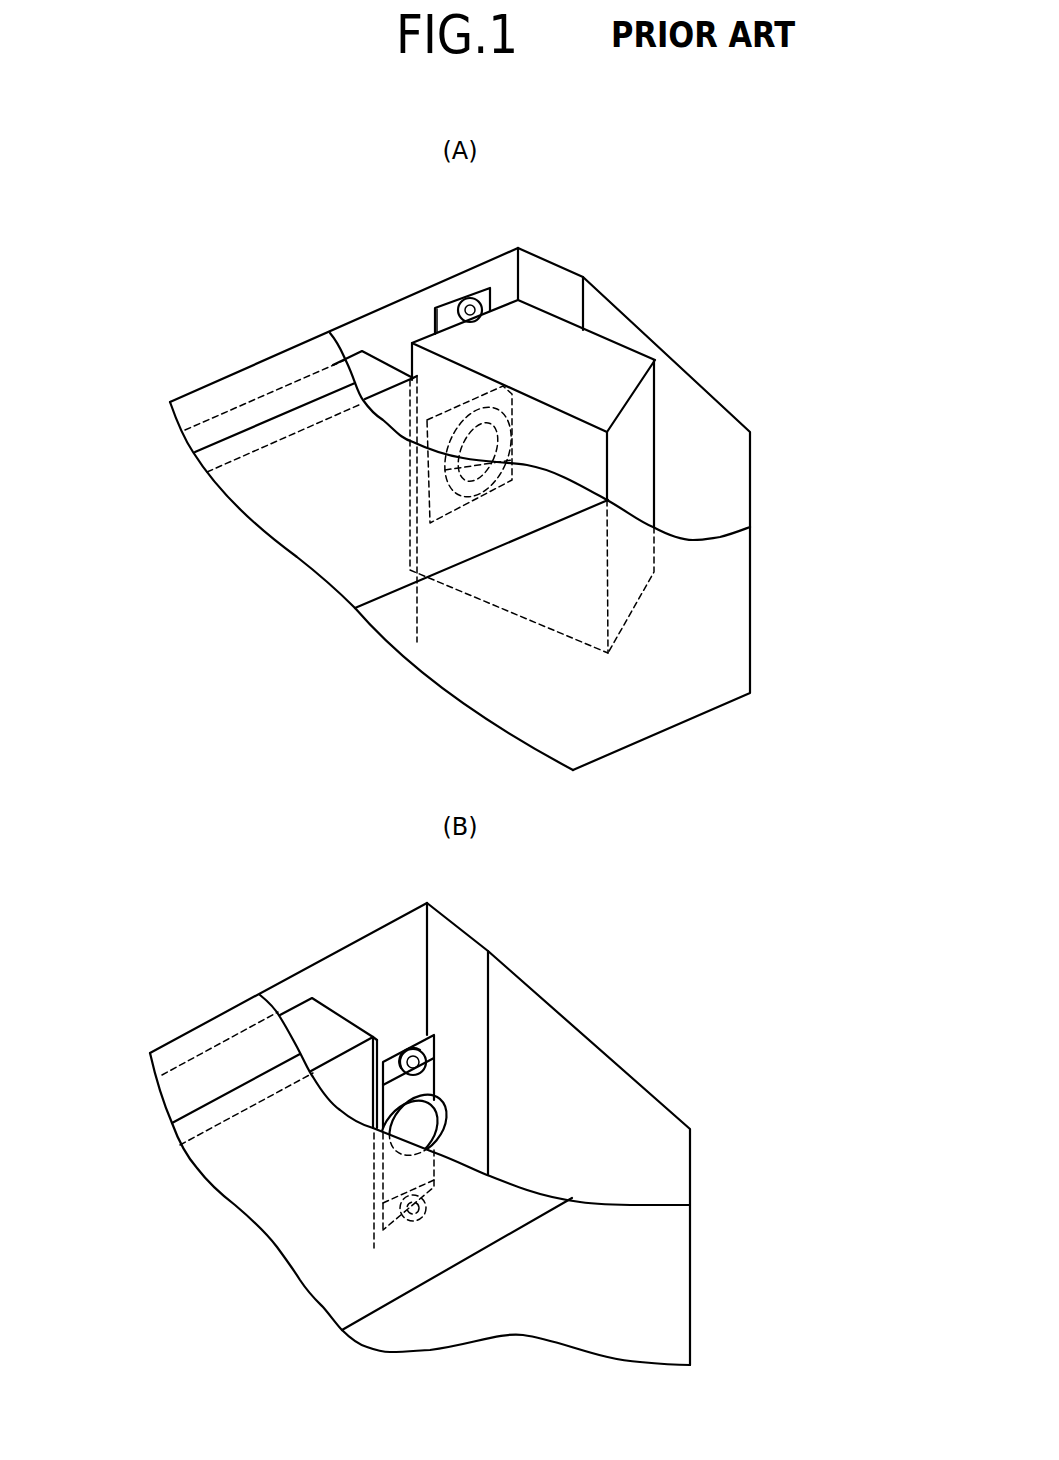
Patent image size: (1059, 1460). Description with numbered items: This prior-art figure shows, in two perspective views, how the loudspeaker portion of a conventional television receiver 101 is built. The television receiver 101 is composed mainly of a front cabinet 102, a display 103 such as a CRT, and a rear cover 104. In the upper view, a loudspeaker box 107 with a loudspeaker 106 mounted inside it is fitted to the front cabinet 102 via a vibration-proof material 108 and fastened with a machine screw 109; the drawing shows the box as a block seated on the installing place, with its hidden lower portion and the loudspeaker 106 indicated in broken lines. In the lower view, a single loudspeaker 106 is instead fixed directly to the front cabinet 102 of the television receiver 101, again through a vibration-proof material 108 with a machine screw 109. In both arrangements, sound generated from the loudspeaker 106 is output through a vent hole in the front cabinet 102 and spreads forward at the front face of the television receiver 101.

The television receiver 101 is at (322, 318).
The front cabinet 102 is at (217, 397).
The display 103 is at (382, 367).
The rear cover 104 is at (297, 557).
The loudspeaker 106 is at (460, 472).
The loudspeaker box 107 is at (628, 356).
The vibration-proof material 108 is at (447, 305).
The machine screw 109 is at (478, 295).